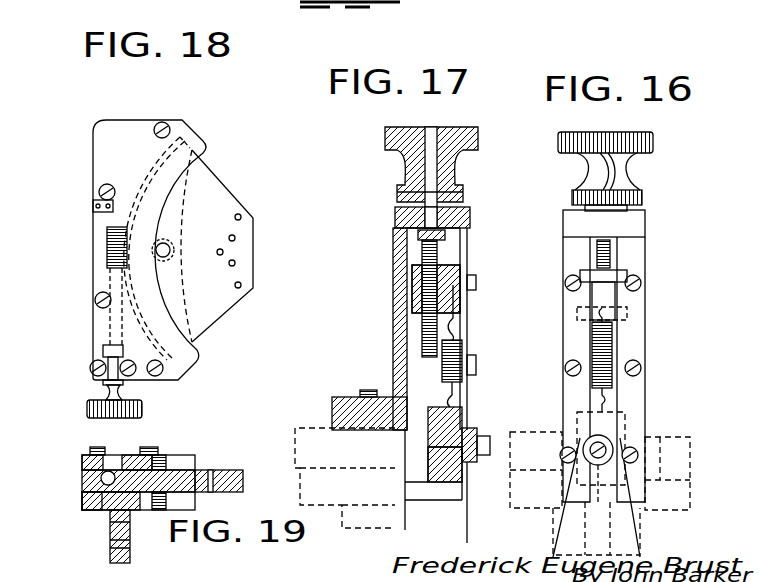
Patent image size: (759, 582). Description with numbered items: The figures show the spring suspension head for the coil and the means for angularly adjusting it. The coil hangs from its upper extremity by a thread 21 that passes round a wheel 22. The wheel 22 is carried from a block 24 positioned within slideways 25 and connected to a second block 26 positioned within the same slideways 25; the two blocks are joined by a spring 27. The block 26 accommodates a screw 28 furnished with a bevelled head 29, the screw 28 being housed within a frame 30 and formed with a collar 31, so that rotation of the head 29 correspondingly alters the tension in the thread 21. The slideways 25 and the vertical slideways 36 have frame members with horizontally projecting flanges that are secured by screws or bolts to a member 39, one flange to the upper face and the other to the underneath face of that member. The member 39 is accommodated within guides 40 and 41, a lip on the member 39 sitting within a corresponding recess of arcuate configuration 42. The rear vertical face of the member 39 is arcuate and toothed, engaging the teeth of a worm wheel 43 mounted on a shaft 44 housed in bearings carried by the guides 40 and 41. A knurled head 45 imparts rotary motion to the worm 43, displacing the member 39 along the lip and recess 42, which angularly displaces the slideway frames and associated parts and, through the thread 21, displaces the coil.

In FIG. 16, the thread 21 is at (625, 505).
In FIG. 17, the wheel 22 is at (468, 430).
In FIG. 16, the wheel 22 is at (630, 432).
In FIG. 17, the block 24 is at (430, 470).
In FIG. 17, the slideways 25 is at (570, 257).
In FIG. 16, the slideways 25 is at (599, 383).
In FIG. 17, the block 26 is at (602, 295).
In FIG. 16, the block 26 is at (602, 295).
In FIG. 17, the spring 27 is at (600, 347).
In FIG. 16, the spring 27 is at (602, 360).
In FIG. 17, the screw 28 is at (603, 253).
In FIG. 16, the screw 28 is at (603, 254).
In FIG. 17, the bevelled head 29 is at (558, 143).
In FIG. 16, the bevelled head 29 is at (605, 171).
In FIG. 17, the frame 30 is at (395, 217).
In FIG. 17, the collar 31 is at (425, 233).
In FIG. 17, the vertical slideways 36 is at (298, 478).
In FIG. 16, the vertical slideways 36 is at (530, 488).
In FIG. 18, the member 39 is at (216, 205).
In FIG. 19, the member 39 is at (228, 480).
In FIG. 17, the member 39 is at (328, 442).
In FIG. 16, the member 39 is at (528, 448).
In FIG. 18, the guide 40 is at (132, 128).
In FIG. 19, the guide 40 is at (185, 468).
In FIG. 19, the guide 41 is at (82, 500).
In FIG. 19, the recess of arcuate configuration 42 is at (105, 510).
In FIG. 18, the worm wheel 43 is at (107, 250).
In FIG. 19, the worm wheel 43 is at (101, 478).
In FIG. 18, the shaft 44 is at (105, 337).
In FIG. 18, the knurled head 45 is at (142, 410).